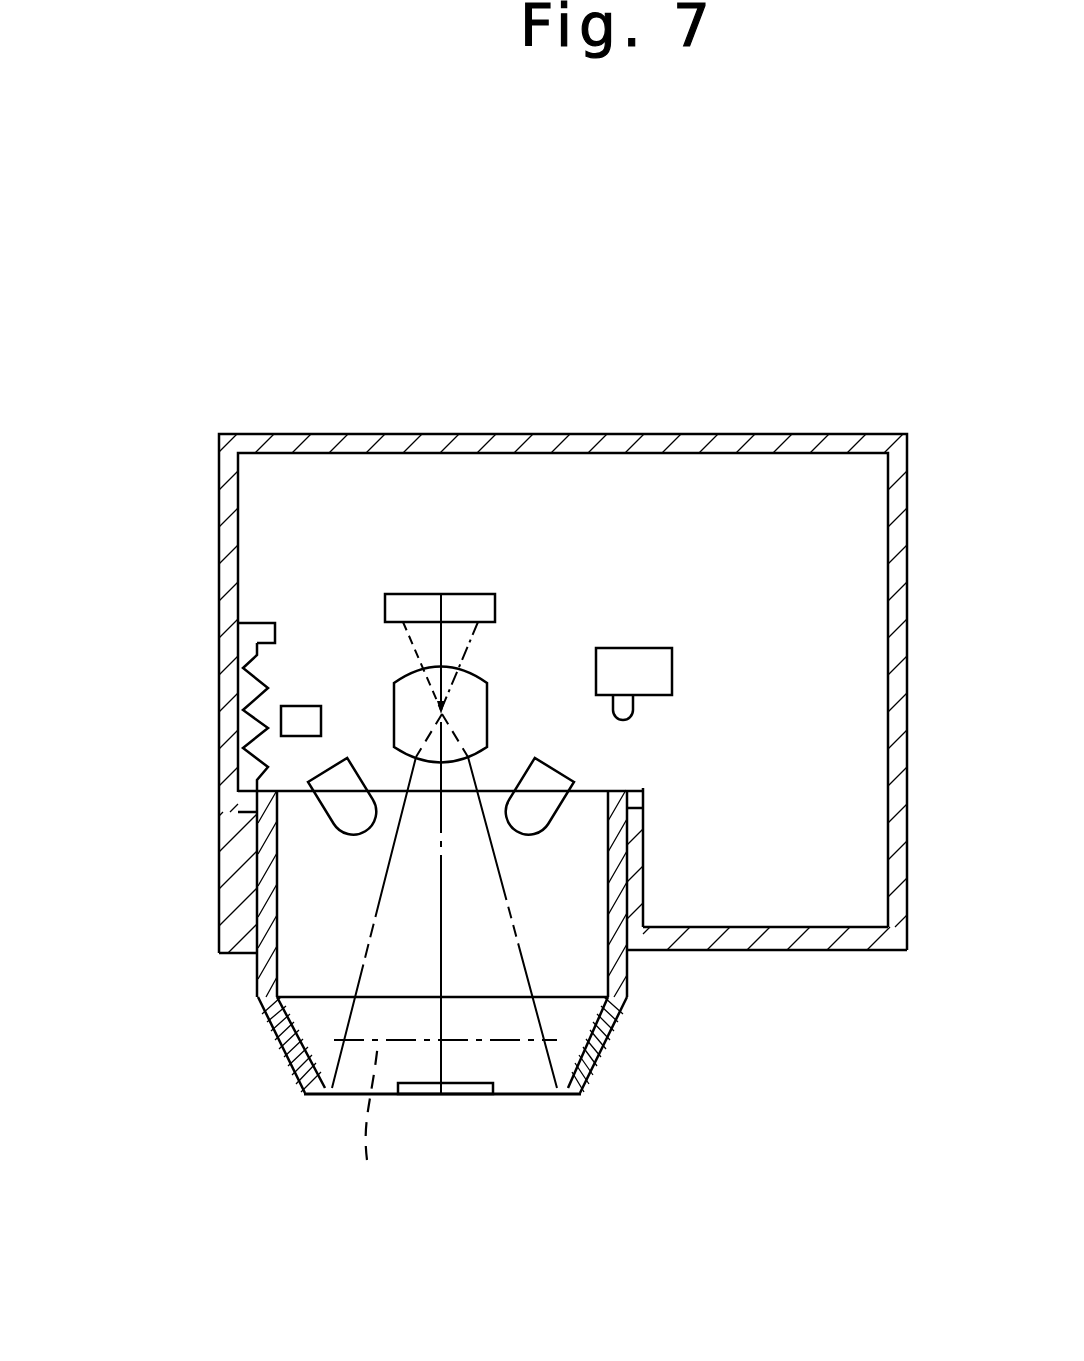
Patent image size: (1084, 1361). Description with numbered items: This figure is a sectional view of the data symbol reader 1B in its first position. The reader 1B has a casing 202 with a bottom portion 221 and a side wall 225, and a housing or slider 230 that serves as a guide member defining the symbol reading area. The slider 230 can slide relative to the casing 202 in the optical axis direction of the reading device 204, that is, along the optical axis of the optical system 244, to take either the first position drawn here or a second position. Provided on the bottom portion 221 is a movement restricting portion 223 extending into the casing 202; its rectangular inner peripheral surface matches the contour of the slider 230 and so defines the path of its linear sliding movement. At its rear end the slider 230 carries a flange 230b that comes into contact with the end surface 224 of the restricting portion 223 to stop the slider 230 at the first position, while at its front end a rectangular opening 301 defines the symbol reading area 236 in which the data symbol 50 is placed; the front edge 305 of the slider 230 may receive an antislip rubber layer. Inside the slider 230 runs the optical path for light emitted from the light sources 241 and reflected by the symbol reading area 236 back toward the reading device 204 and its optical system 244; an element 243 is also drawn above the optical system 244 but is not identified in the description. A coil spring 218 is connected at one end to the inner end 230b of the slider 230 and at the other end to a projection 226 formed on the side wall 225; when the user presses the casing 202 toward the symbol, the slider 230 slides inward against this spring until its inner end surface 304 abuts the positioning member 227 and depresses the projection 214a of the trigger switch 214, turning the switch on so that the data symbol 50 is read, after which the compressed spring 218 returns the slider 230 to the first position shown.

The data symbol reader 1B is at (643, 262).
The casing 202 is at (786, 428).
The reading device 204 is at (592, 582).
The trigger switch 214 is at (677, 656).
The projection of trigger switch 214a is at (632, 707).
The coil spring 218 is at (268, 688).
The bottom portion 221 is at (235, 940).
The movement restricting portion 223 is at (243, 852).
The end surface of restricting portion 224 is at (253, 820).
The side wall of casing 225 is at (230, 575).
The projection 226 is at (262, 622).
The positioning member 227 is at (290, 712).
The housing (slider) 230 is at (644, 988).
The flange 230b is at (247, 797).
The symbol reading area 236 is at (367, 1160).
The light sources 241 is at (343, 777).
The image sensor 243 is at (465, 605).
The optical system 244 is at (467, 683).
The rectangular opening 301 is at (533, 1111).
The inner end surface 304 is at (258, 780).
The front edge 305 is at (318, 1097).
The data symbol 50 is at (420, 1088).